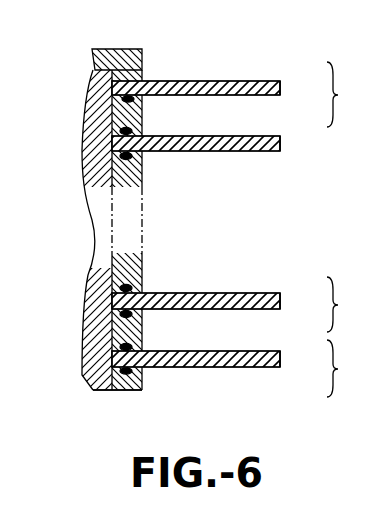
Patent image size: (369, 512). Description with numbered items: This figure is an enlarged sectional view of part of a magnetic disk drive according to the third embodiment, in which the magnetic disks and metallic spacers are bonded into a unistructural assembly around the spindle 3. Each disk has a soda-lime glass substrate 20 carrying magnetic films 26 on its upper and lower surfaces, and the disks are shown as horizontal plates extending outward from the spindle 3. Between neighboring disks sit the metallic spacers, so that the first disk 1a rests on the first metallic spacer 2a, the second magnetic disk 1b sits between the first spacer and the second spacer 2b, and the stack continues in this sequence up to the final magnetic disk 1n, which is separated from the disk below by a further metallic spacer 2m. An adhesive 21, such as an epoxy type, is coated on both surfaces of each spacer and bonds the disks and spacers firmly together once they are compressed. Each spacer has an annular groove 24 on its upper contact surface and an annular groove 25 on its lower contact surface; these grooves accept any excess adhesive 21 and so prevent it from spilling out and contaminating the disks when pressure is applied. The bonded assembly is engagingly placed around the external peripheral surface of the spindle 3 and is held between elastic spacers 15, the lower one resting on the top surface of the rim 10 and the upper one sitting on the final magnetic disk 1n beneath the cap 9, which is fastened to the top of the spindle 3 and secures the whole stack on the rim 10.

The spindle 3 is at (94, 392).
The cap 9 is at (103, 49).
The rim 10 is at (140, 392).
The elastic spacer 15 is at (143, 72).
The substrate 20 is at (281, 88).
The adhesive 21 is at (143, 170).
The annular groove 24 is at (112, 122).
The annular groove 25 is at (112, 148).
The magnetic film 26 is at (258, 81).
The first metallic spacer 2a is at (143, 335).
The second spacer 2b is at (143, 262).
The metallic spacer 2m is at (165, 120).
The first disk 1a is at (343, 368).
The second magnetic disk 1b is at (343, 304).
The final magnetic disk 1n is at (343, 94).